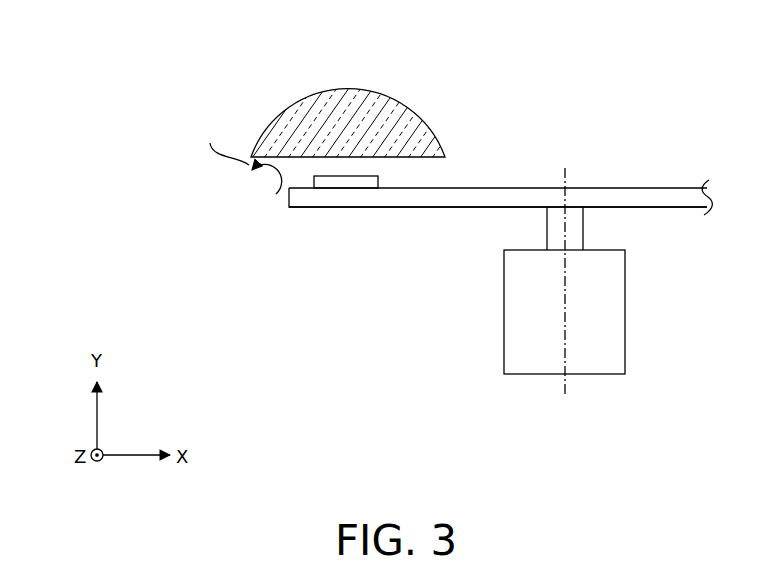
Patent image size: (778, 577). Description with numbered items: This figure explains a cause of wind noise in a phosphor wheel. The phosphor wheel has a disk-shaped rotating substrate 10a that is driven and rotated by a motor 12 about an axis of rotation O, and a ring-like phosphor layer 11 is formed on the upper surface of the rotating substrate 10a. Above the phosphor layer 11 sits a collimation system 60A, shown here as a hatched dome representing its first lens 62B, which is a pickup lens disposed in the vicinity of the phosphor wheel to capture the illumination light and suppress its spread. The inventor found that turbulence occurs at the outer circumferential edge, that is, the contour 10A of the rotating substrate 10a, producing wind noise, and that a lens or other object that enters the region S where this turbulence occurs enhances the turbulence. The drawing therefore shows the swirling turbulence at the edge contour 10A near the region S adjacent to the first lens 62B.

The contour of the rotating substrate 10A is at (288, 196).
The rotating substrate 10a is at (290, 208).
The phosphor layer 11 is at (378, 184).
The motor 12 is at (604, 344).
The collimation system 60A is at (352, 94).
The first lens 62B is at (381, 103).
The axis of rotation O is at (568, 175).
The region where turbulence occurs S is at (261, 183).